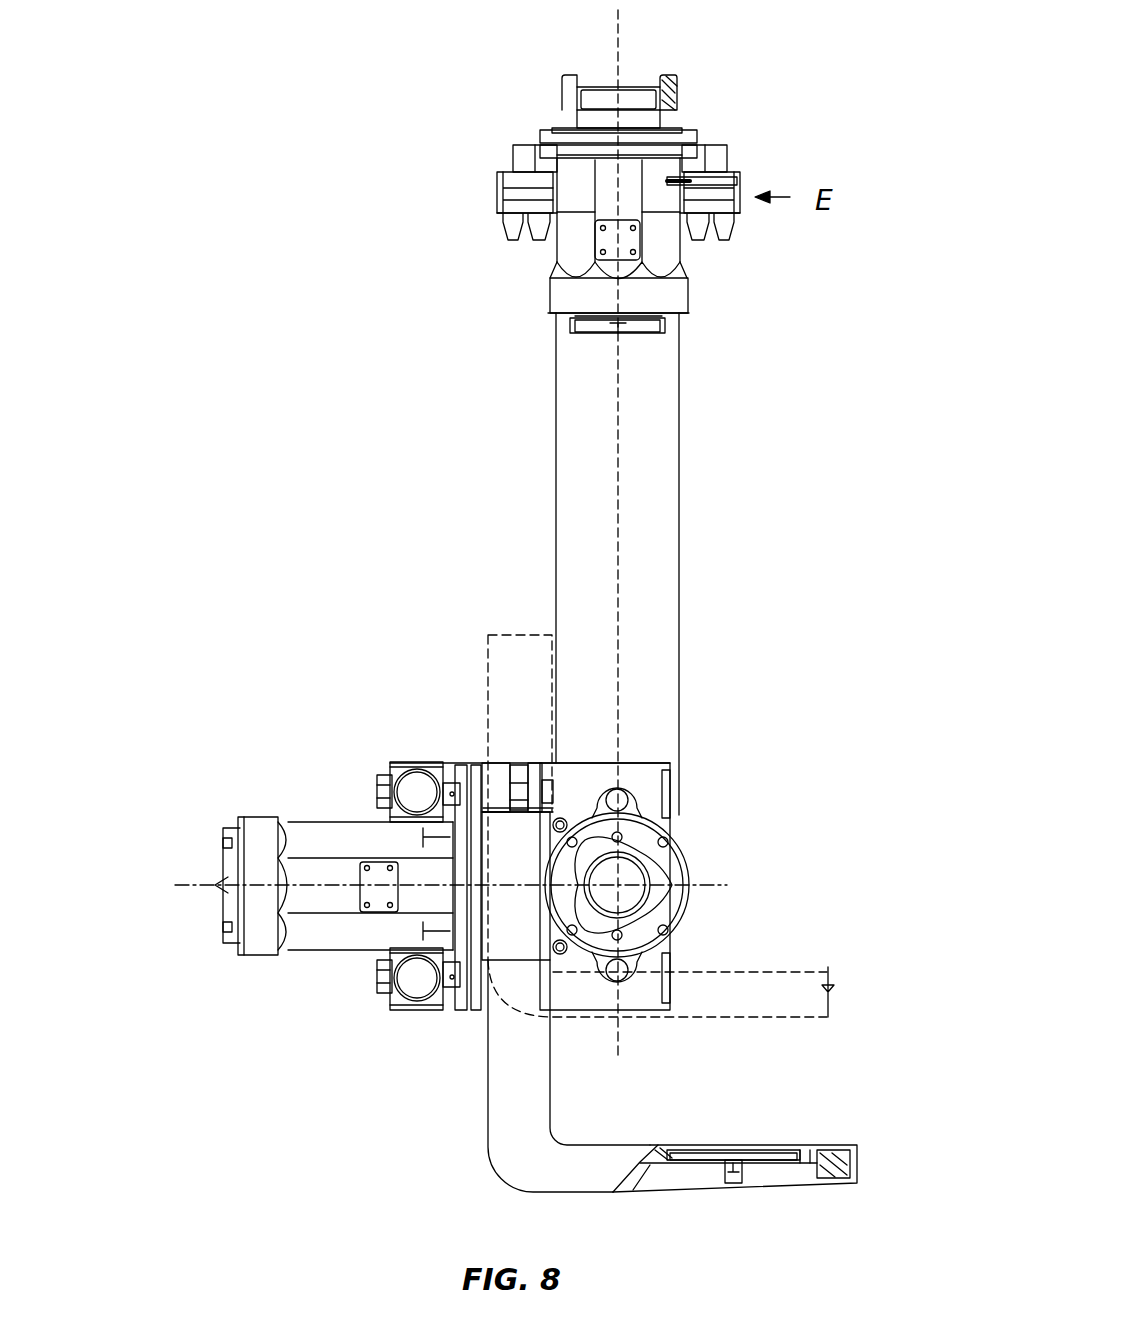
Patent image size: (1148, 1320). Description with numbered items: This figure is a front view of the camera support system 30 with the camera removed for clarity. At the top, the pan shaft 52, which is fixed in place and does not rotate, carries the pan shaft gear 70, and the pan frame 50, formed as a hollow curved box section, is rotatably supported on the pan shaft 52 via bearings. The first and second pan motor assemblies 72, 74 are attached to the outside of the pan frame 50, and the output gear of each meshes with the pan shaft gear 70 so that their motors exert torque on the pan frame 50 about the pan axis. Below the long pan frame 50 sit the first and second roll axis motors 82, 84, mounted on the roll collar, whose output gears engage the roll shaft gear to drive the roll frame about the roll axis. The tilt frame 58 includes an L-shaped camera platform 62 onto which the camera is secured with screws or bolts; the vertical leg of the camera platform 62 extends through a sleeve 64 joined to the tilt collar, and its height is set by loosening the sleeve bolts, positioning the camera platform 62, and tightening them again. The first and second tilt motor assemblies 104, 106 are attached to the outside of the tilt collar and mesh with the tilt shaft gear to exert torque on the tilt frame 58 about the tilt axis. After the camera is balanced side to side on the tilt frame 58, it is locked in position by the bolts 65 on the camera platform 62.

The support system 30 is at (777, 602).
The pan frame 50 is at (657, 438).
The pan shaft 52 is at (590, 115).
The tilt frame 58 is at (488, 1100).
The camera platform 62 is at (617, 1145).
The sleeve 64 is at (508, 943).
The bolts 65 is at (732, 1183).
The pan shaft gear 70 is at (693, 150).
The first pan motor assembly 72 is at (720, 198).
The second pan motor assembly 74 is at (517, 197).
The first roll axis motor 82 is at (643, 772).
The second roll axis motor 84 is at (623, 1003).
The first tilt motor assembly 104 is at (390, 793).
The second tilt motor assembly 106 is at (387, 993).